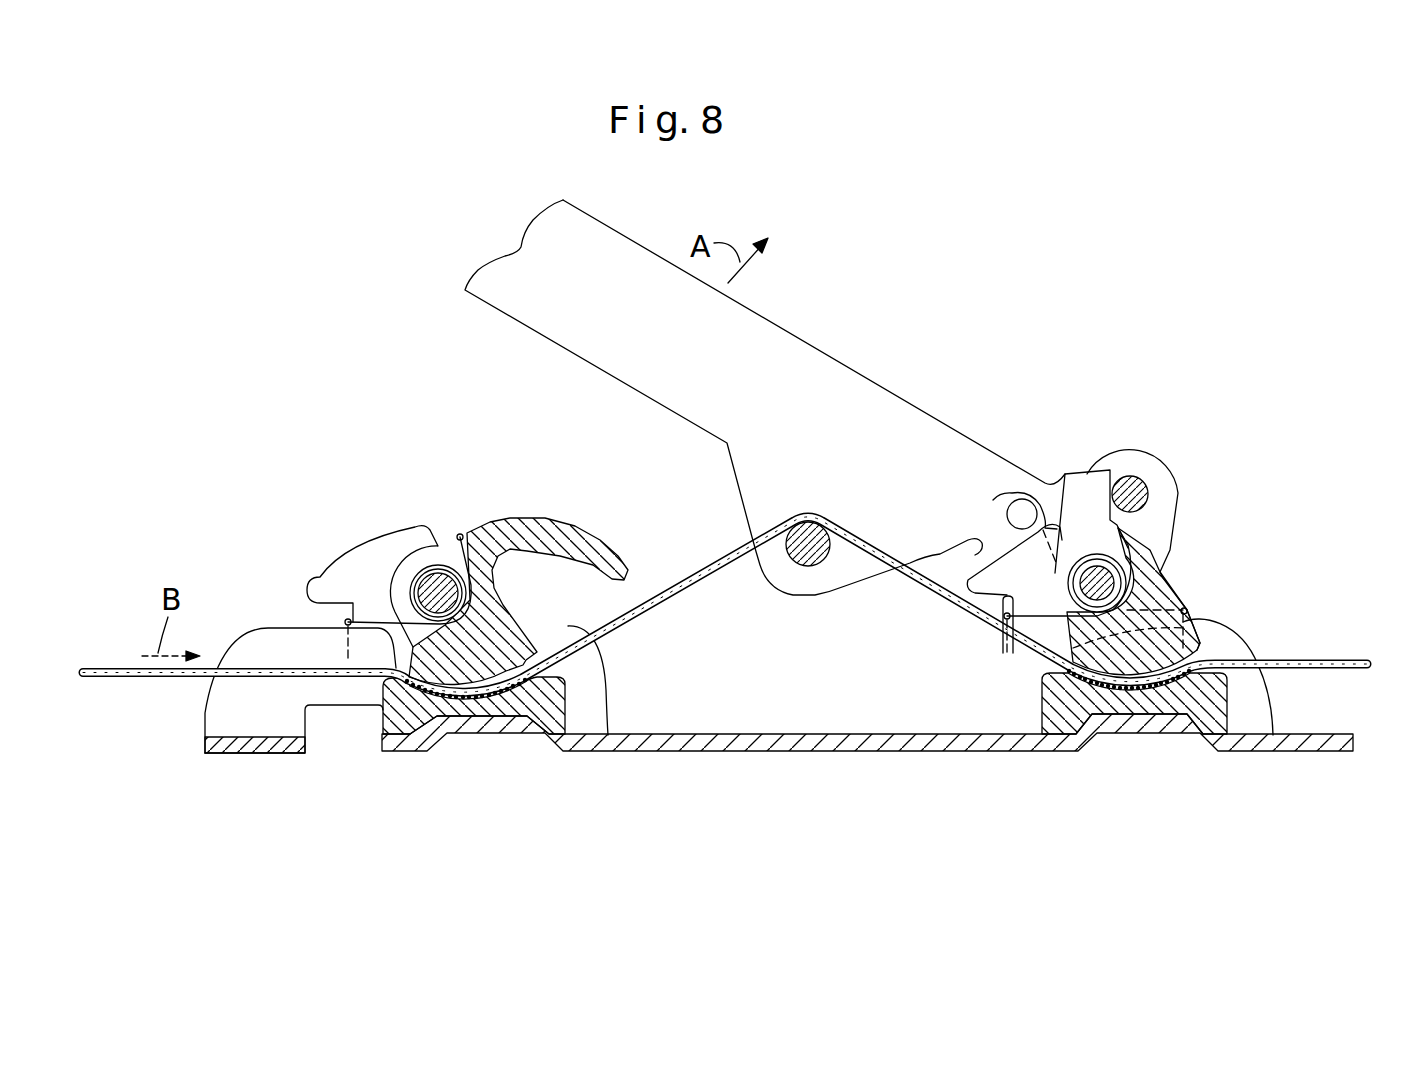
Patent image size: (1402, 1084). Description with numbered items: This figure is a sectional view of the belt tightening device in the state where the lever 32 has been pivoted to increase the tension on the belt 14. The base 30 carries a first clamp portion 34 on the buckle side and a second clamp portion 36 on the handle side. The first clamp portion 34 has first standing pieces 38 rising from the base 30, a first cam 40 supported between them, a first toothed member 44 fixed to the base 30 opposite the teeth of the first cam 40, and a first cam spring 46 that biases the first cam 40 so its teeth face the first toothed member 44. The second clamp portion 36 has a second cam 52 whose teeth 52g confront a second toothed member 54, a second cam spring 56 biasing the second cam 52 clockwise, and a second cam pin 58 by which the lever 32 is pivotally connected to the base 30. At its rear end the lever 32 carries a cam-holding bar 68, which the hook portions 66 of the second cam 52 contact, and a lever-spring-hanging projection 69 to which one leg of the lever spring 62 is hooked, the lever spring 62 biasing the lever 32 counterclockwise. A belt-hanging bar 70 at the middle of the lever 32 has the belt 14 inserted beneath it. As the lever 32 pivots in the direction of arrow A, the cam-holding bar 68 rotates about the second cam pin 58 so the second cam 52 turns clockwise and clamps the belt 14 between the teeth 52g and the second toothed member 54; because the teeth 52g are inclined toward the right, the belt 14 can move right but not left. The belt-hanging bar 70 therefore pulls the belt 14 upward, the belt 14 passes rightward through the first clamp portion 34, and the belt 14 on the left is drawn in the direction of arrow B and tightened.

The belt 14 is at (106, 668).
The base 30 is at (765, 748).
The lever 32 is at (790, 350).
The first clamp portion 34 is at (366, 527).
The second clamp portion 36 is at (1191, 584).
The first standing pieces 38 is at (322, 582).
The first cam 40 is at (527, 535).
The first toothed member 44 is at (487, 707).
The first cam spring 46 is at (440, 565).
The second cam 52 is at (1213, 640).
The teeth of the second cam 52g is at (1040, 678).
The second toothed member 54 is at (1115, 707).
The second cam spring 56 is at (1120, 527).
The second cam pin 58 is at (1088, 588).
The lever spring 62 is at (993, 498).
The hook portions 66 is at (1083, 495).
The cam-holding bar 68 is at (1134, 478).
The lever-spring-hanging projection 69 is at (1010, 517).
The belt-hanging bar 70 is at (800, 558).